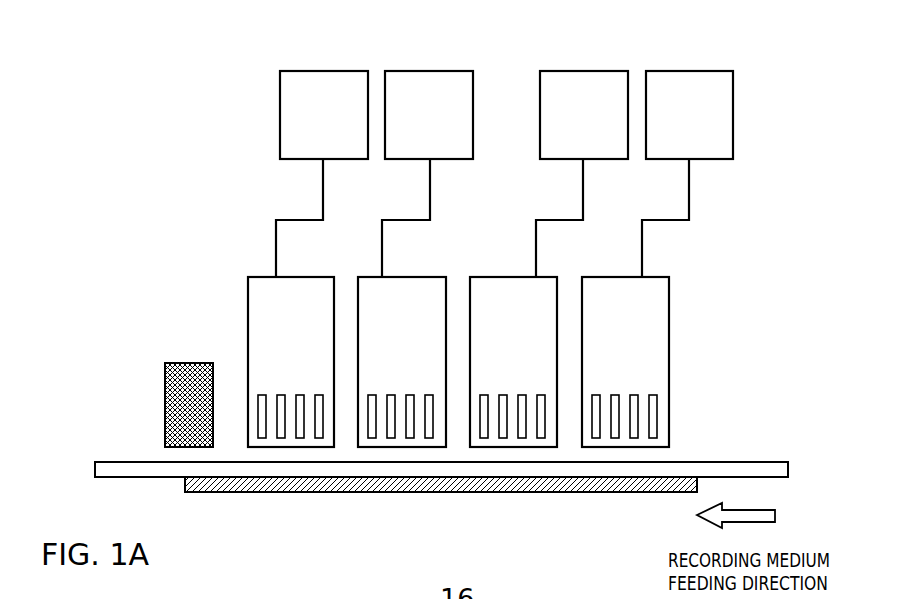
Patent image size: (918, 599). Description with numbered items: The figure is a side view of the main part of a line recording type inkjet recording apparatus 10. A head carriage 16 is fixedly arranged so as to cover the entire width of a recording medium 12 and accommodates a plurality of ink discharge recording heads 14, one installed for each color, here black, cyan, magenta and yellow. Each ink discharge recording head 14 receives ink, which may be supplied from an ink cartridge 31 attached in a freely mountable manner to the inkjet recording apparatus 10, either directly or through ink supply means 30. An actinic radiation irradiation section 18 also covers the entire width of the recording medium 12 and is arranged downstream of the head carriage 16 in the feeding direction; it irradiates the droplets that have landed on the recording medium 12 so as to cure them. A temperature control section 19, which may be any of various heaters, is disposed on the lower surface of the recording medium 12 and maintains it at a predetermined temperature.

The inkjet recording apparatus 10 is at (801, 237).
The recording medium 12 is at (760, 471).
The ink discharge recording head 14 is at (652, 410).
The head carriage 16 is at (625, 277).
The actinic radiation irradiation section 18 is at (186, 362).
The temperature control section 19 is at (589, 493).
The ink supply means 30 is at (693, 197).
The ink cartridge 31 is at (689, 71).